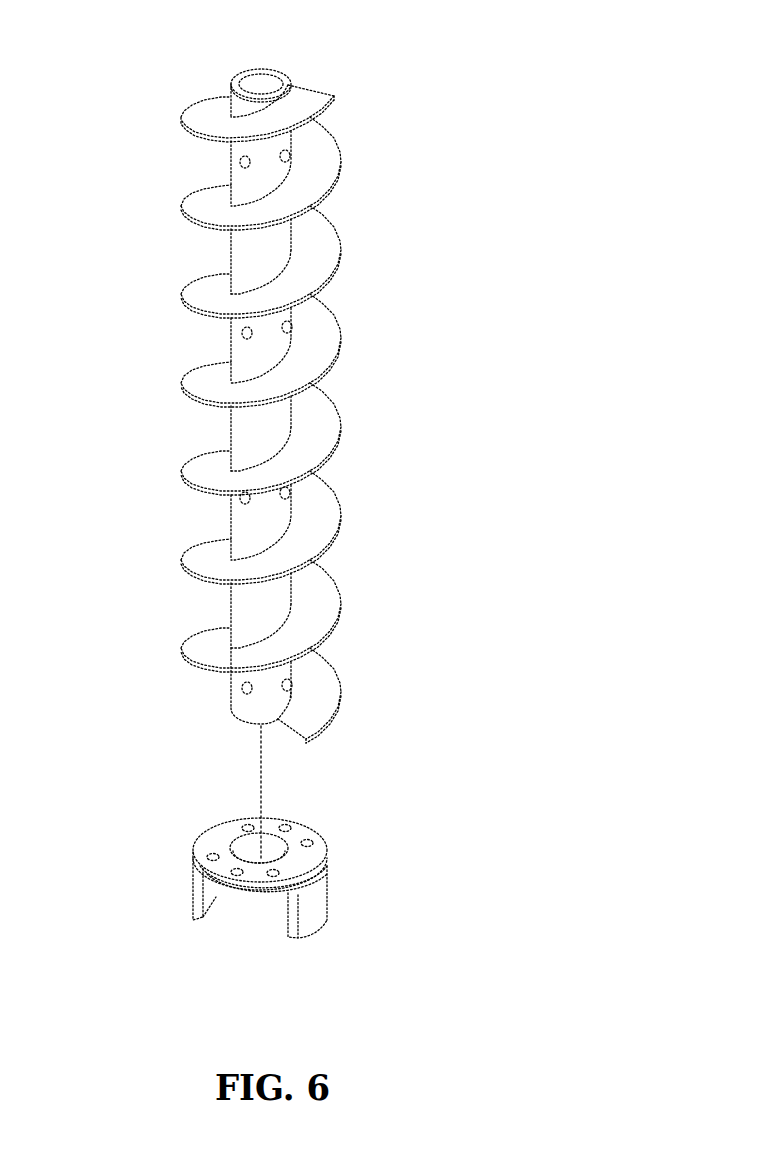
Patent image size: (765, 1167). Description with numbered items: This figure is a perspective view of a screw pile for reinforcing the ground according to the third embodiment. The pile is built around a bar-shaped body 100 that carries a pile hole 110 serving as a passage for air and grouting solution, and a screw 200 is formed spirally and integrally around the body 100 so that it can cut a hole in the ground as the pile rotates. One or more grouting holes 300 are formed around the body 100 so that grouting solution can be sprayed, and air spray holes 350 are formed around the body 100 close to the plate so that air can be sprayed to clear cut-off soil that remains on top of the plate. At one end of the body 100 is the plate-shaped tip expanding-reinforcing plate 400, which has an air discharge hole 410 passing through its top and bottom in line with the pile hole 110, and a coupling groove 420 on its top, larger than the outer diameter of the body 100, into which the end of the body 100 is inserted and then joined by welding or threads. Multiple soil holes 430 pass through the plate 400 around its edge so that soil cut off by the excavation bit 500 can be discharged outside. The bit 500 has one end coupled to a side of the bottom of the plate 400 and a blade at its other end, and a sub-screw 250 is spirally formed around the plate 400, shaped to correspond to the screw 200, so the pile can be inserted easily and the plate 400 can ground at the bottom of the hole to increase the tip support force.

The body 100 is at (233, 82).
The pile hole 110 is at (262, 83).
The screw 200 is at (322, 590).
The grouting holes 300 is at (241, 333).
The air spray holes 350 is at (241, 690).
The tip expanding-reinforcing plate 400 is at (193, 860).
The air discharge hole 410 is at (258, 858).
The coupling groove 420 is at (290, 837).
The soil holes 430 is at (311, 841).
The excavation bit 500 is at (318, 910).
The sub-screw 250 is at (250, 905).